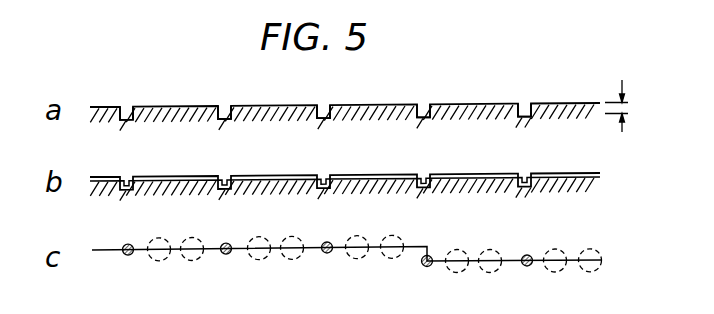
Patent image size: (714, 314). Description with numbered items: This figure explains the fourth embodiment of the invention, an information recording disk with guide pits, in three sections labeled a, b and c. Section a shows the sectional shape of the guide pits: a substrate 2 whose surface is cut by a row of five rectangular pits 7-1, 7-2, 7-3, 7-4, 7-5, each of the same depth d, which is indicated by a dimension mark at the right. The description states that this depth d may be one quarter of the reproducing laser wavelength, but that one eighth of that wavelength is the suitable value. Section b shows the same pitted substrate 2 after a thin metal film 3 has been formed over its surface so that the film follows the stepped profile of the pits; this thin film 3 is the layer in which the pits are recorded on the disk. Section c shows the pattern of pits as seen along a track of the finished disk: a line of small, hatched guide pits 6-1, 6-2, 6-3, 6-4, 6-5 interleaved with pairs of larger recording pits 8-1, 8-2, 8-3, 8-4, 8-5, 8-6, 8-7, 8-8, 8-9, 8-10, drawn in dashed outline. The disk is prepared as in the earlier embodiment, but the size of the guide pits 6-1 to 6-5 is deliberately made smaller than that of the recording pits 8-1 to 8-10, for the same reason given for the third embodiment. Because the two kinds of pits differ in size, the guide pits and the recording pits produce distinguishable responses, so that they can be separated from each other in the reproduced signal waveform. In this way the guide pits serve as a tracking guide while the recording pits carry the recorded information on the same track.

The substrate 2 is at (562, 108).
The thin metal film 3 is at (568, 172).
The depth of the pits d is at (625, 106).
The groove 7-1 is at (123, 106).
The groove 7-2 is at (221, 106).
The groove 7-3 is at (324, 105).
The groove 7-4 is at (432, 94).
The groove 7-5 is at (536, 94).
The guide pit 6-1 is at (128, 255).
The guide pit 6-2 is at (226, 254).
The guide pit 6-3 is at (327, 253).
The guide pit 6-4 is at (427, 266).
The guide pit 6-5 is at (527, 266).
The recording pit 8-1 is at (156, 238).
The recording pit 8-2 is at (192, 238).
The recording pit 8-3 is at (259, 237).
The recording pit 8-4 is at (298, 230).
The recording pit 8-5 is at (357, 236).
The recording pit 8-6 is at (410, 230).
The recording pit 8-7 is at (457, 250).
The recording pit 8-8 is at (505, 242).
The recording pit 8-9 is at (566, 240).
The recording pit 8-10 is at (600, 252).